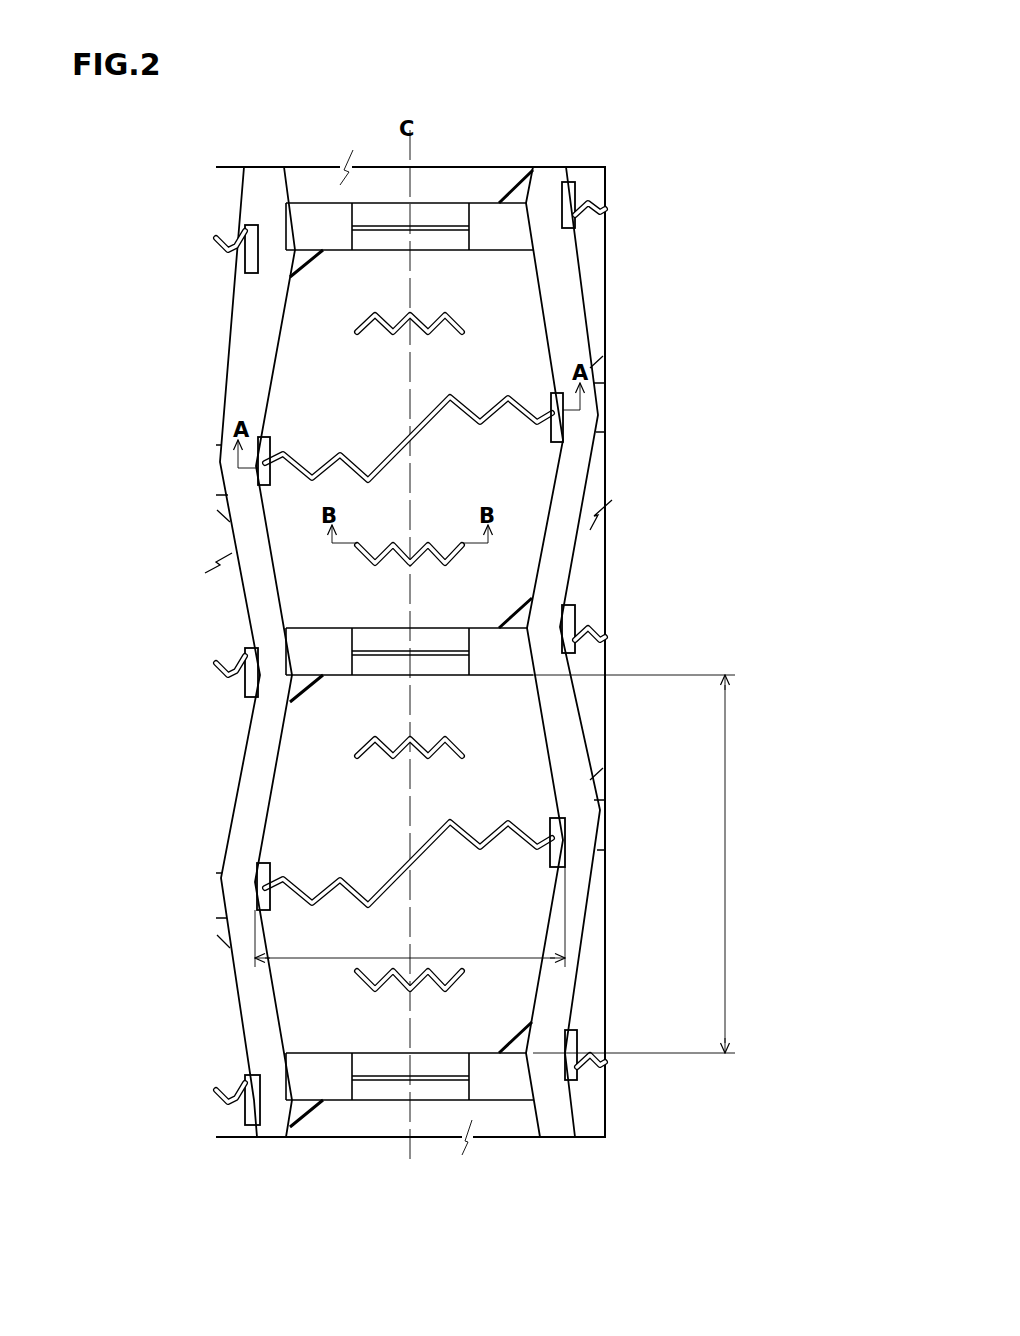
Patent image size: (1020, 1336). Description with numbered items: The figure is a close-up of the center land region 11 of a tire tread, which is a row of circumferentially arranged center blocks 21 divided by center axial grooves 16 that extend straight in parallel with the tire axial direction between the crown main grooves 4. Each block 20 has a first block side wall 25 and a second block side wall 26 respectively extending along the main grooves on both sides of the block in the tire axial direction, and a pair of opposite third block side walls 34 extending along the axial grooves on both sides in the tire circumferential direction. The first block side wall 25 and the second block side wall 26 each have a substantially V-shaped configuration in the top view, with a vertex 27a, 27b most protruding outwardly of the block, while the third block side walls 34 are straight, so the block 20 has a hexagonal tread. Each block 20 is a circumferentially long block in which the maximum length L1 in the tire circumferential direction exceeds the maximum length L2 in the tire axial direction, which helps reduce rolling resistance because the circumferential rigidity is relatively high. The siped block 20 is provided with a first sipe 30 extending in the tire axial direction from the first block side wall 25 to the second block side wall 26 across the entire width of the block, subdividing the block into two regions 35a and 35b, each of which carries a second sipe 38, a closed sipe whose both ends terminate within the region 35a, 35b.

The crown main groove 4 is at (265, 195).
The center land region 11 is at (455, 190).
The center axial groove 16 is at (495, 232).
The block 20 is at (412, 561).
The center block 21 is at (447, 493).
The first block side wall 25 is at (560, 360).
The second block side wall 26 is at (268, 380).
The vertex 27a is at (563, 843).
The vertex 27b is at (258, 885).
The first sipe 30 is at (463, 405).
The third block side wall 34 is at (333, 245).
The region 35a is at (488, 295).
The region 35b is at (462, 585).
The second sipe 38 is at (400, 320).
The maximum length in the tire circumferential direction L1 is at (649, 864).
The maximum length in the tire axial direction L2 is at (410, 917).